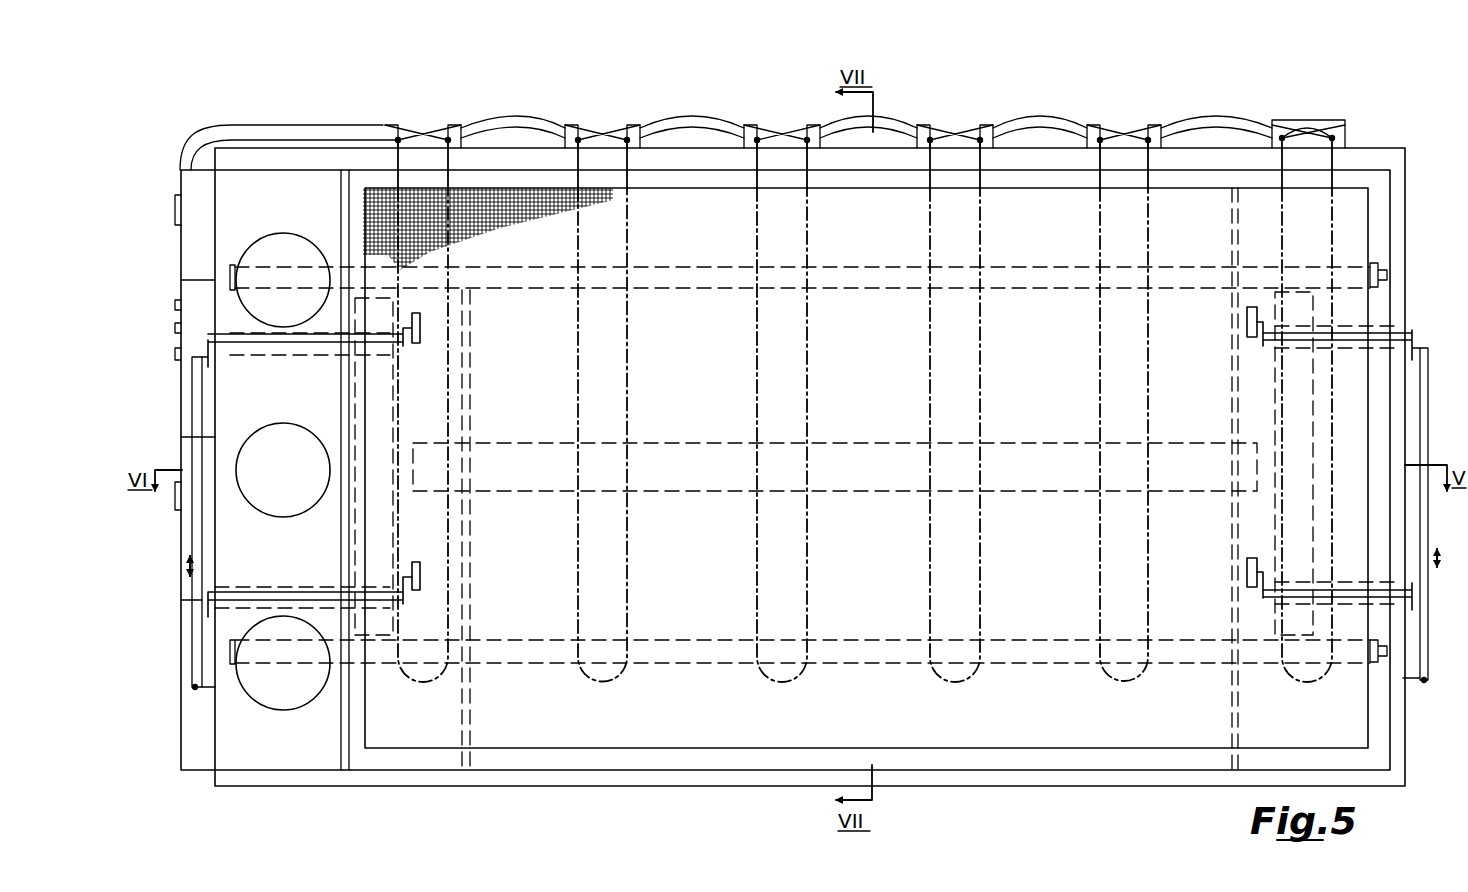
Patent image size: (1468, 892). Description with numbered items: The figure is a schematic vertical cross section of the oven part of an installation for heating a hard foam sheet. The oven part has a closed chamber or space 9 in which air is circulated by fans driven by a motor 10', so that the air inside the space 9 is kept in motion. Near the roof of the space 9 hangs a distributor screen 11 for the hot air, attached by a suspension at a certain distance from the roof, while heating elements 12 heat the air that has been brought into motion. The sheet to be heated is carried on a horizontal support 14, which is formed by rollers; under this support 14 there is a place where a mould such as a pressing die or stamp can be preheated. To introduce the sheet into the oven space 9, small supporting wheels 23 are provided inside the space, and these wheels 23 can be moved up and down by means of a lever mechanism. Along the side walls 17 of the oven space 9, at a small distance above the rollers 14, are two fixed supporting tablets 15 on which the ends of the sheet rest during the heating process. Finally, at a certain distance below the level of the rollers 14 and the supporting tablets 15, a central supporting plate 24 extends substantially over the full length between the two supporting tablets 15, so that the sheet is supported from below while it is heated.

The closed chamber or space 9 is at (858, 697).
The motor 10' is at (281, 471).
The distributor screen 11 is at (380, 188).
The heating elements 12 is at (707, 573).
The horizontal support 14 is at (548, 268).
The fixed supporting tablets 15 is at (378, 636).
The side walls 17 is at (1406, 712).
The small supporting wheels 23 is at (420, 322).
The central supporting plate 24 is at (905, 492).